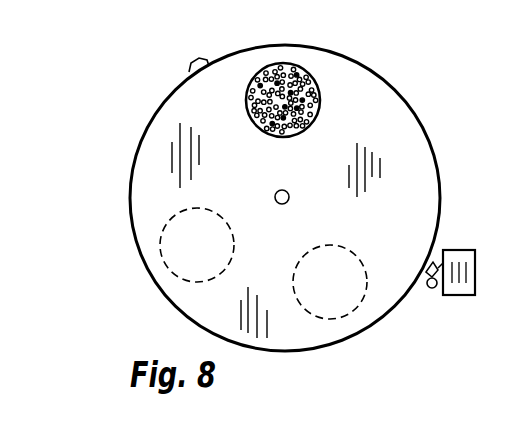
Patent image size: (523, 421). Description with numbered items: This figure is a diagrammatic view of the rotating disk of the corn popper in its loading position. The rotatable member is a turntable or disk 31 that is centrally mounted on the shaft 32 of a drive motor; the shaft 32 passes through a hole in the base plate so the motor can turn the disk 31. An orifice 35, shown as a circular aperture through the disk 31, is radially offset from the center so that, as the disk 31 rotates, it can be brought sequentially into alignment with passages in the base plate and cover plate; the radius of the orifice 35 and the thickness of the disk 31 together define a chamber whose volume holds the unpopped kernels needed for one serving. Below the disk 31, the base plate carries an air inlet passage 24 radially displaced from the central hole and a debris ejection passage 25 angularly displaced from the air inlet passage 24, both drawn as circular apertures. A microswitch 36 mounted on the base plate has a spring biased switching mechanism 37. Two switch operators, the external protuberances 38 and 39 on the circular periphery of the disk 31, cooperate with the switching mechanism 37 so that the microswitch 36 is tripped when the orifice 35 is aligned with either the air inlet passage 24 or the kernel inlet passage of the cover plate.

The air inlet passage 24 is at (331, 320).
The debris ejection passage 25 is at (168, 282).
The disk 31 is at (415, 113).
The shaft 32 is at (288, 200).
The orifice 35 is at (312, 75).
The microswitch 36 is at (474, 266).
The spring biased switching mechanism 37 is at (432, 290).
The external protuberance 38 is at (434, 266).
The external protuberance 39 is at (190, 68).